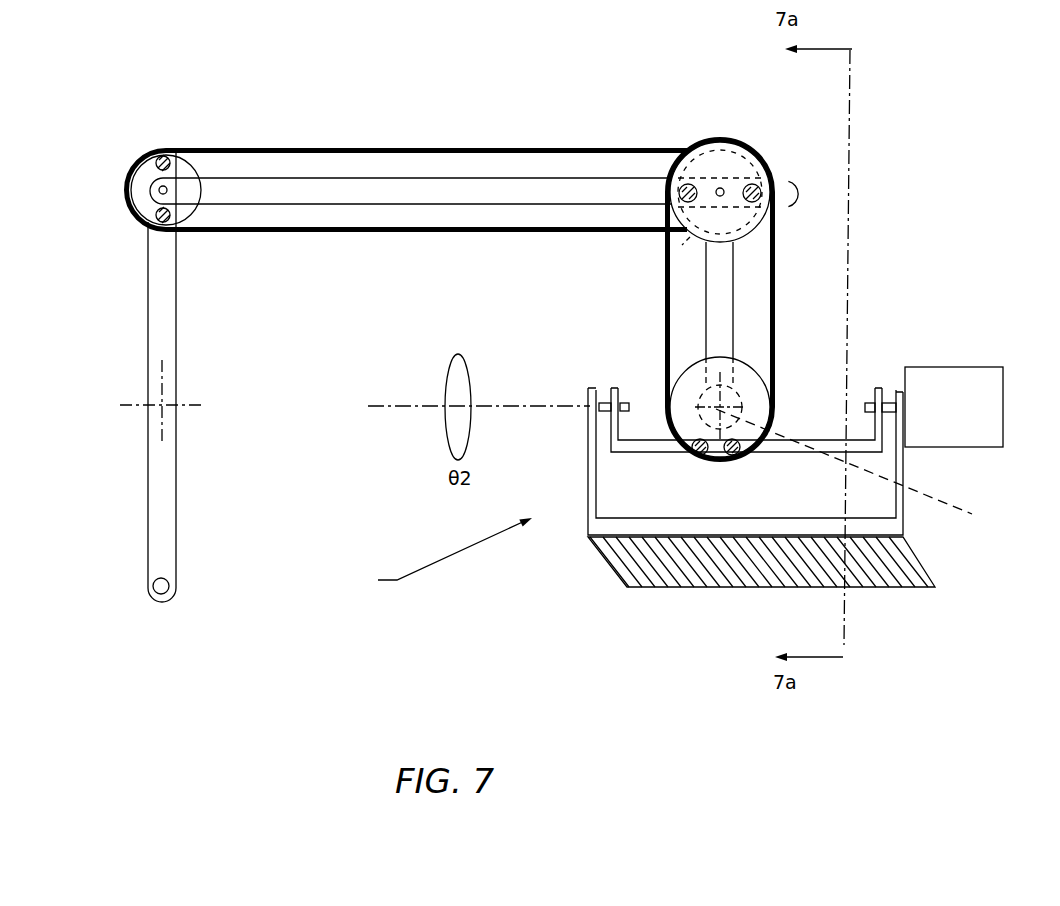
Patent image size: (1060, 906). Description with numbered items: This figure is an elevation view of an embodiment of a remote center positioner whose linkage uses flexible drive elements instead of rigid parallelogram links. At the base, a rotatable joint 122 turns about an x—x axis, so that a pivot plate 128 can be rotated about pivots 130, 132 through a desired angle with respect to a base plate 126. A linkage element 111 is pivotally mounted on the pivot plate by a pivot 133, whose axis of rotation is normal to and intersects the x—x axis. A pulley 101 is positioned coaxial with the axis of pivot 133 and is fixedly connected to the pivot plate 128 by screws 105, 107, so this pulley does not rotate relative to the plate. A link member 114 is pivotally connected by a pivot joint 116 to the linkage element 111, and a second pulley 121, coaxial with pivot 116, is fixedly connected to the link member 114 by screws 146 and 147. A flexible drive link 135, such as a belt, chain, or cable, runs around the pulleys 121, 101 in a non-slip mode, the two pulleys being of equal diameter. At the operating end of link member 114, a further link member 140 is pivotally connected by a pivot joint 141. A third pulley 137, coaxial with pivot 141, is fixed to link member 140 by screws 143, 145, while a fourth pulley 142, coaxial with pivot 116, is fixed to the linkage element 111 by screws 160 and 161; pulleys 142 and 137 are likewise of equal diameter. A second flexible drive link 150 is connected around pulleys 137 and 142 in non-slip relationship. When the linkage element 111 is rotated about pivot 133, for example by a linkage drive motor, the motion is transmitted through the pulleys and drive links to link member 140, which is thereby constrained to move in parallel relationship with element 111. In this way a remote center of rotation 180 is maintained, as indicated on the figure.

The pulley 101 is at (753, 367).
The screw 105 is at (695, 457).
The screw 107 is at (726, 458).
The linkage element 111 is at (705, 280).
The link member 114 is at (403, 177).
The pivot joint 116 is at (724, 190).
The second pulley 121 is at (763, 228).
The rotatable joint 122 is at (430, 554).
The base plate 126 is at (905, 520).
The pivot plate 128 is at (790, 453).
The pivot 130 is at (888, 392).
The pivot 132 is at (603, 403).
The pivot 133 is at (873, 467).
The flexible drive link 135 is at (665, 342).
The third pulley 137 is at (217, 148).
The link member 140 is at (177, 330).
The pivot joint 141 is at (178, 232).
The fourth pulley 142 is at (758, 147).
The screw 143 is at (176, 242).
The screw 145 is at (170, 150).
The screw 146 is at (762, 180).
The screw 147 is at (680, 197).
The second flexible drive link 150 is at (348, 150).
The screw 160 is at (690, 237).
The screw 161 is at (697, 143).
The remote center of rotation 180 is at (177, 417).